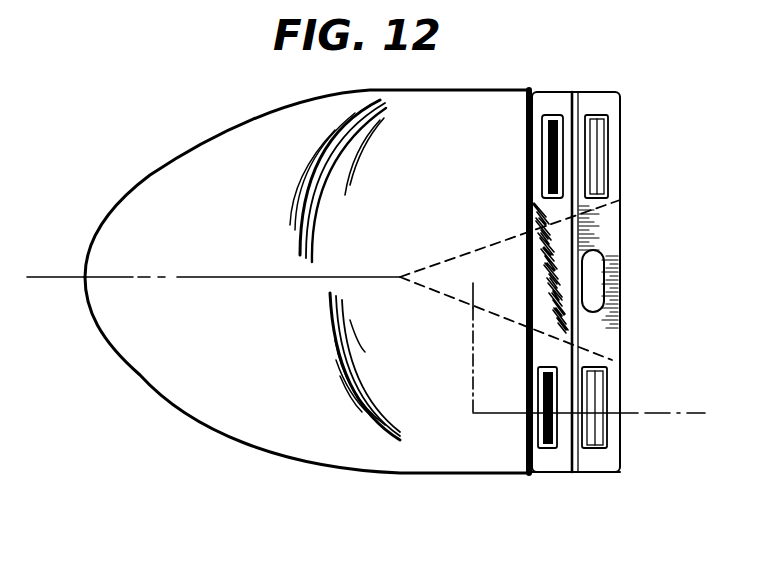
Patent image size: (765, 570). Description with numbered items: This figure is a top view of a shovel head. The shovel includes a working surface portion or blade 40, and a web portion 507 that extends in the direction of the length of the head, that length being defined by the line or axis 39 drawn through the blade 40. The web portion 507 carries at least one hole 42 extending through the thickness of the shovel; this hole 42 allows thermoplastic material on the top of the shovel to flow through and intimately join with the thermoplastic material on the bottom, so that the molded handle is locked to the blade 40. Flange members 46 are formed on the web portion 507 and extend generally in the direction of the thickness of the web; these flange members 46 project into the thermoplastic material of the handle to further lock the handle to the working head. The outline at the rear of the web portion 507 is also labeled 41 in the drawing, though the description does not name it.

The line or axis 39 is at (258, 279).
The blade 40 is at (369, 462).
The end plate 41 is at (596, 98).
The hole 42 is at (592, 273).
The flange members 46 is at (562, 143).
The web portion 507 is at (605, 463).